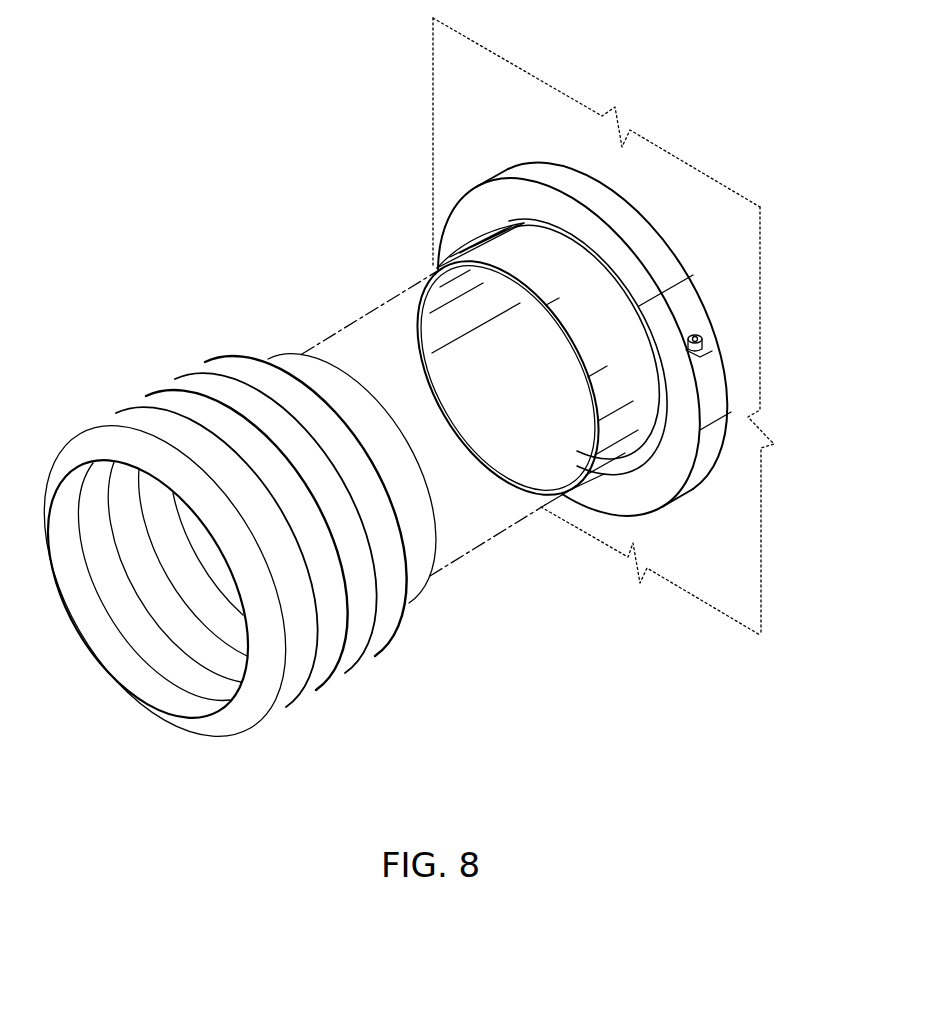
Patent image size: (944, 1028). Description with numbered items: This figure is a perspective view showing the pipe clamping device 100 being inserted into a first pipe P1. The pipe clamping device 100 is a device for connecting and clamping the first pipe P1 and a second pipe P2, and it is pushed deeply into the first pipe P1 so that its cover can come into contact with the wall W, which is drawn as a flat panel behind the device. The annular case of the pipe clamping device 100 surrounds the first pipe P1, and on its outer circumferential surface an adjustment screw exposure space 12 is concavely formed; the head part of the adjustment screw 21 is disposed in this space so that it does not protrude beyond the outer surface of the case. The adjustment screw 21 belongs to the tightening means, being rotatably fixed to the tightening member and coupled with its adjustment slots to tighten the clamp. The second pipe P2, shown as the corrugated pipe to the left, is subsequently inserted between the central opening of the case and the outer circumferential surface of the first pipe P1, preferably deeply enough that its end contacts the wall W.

The pipe clamping device 100 is at (463, 166).
The first pipe P1 is at (505, 256).
The second pipe P2 is at (152, 402).
The adjustment screw exposure space 12 is at (684, 319).
The adjustment screw 21 is at (702, 352).
The wall W is at (733, 562).